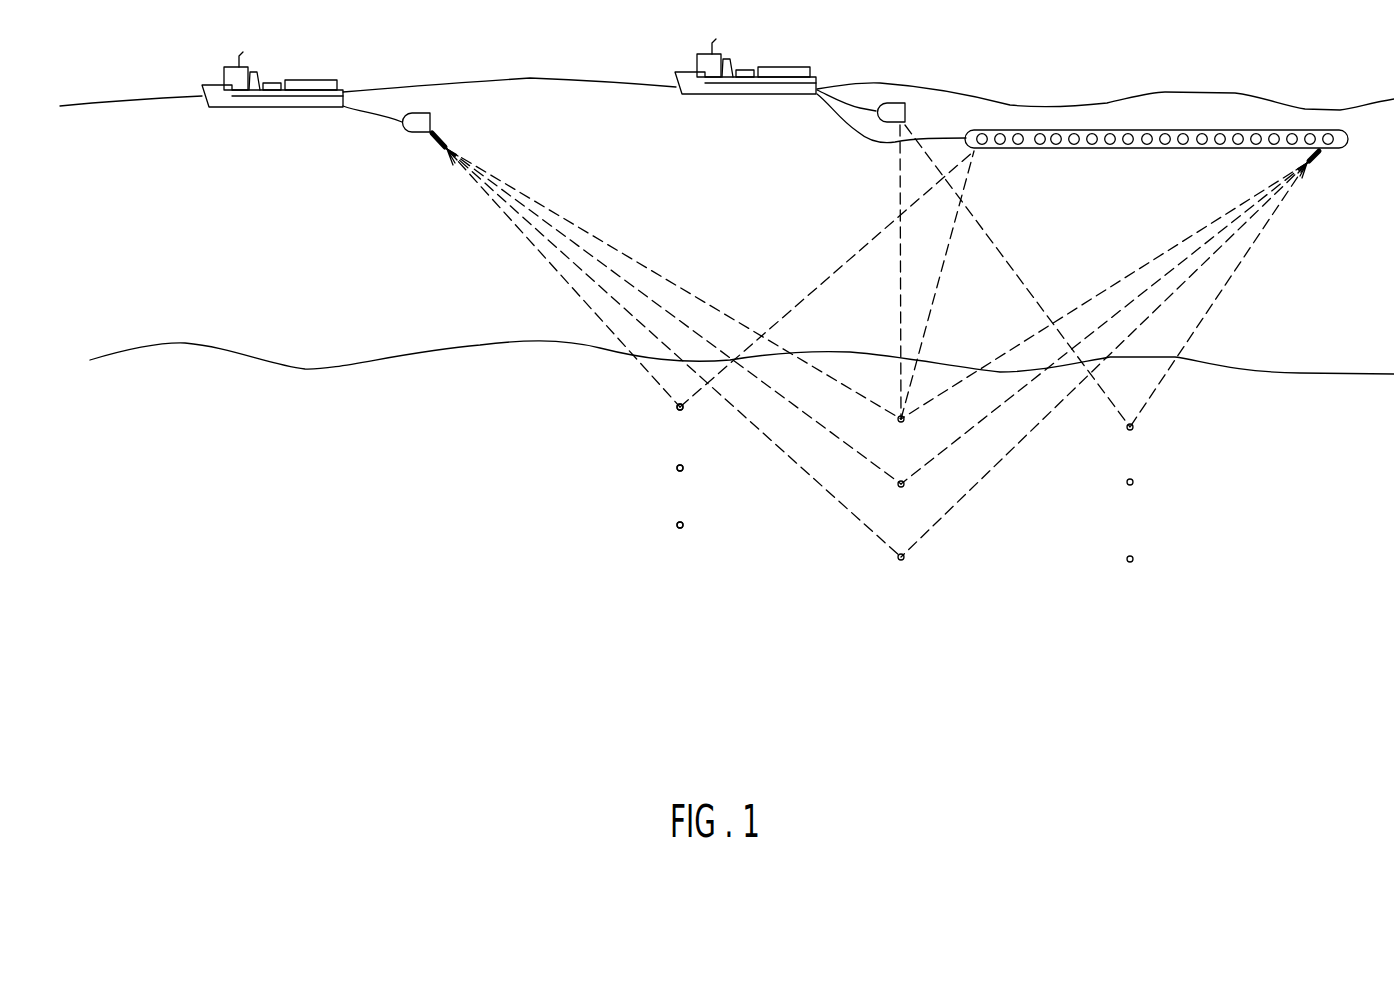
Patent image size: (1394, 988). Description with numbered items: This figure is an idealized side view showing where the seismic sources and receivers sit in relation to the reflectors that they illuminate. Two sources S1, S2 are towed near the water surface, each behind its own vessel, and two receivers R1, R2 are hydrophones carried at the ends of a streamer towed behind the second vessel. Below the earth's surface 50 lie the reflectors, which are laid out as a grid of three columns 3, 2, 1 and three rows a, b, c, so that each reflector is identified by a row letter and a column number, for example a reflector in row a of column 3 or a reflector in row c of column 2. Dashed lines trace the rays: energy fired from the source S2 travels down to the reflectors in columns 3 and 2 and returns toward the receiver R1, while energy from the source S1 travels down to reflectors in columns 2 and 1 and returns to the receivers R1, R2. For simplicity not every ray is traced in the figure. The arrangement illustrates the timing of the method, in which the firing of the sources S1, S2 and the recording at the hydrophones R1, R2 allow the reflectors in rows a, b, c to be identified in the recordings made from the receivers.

The source S1 is at (905, 103).
The source S2 is at (430, 120).
The receiver R1 is at (985, 130).
The receiver R2 is at (1335, 130).
The earth's surface 50 is at (333, 368).
The reflector column 1 is at (1128, 520).
The reflector column 2 is at (901, 516).
The reflector column 3 is at (679, 510).
The reflector row a is at (646, 406).
The reflector row b is at (647, 465).
The reflector row c is at (647, 523).